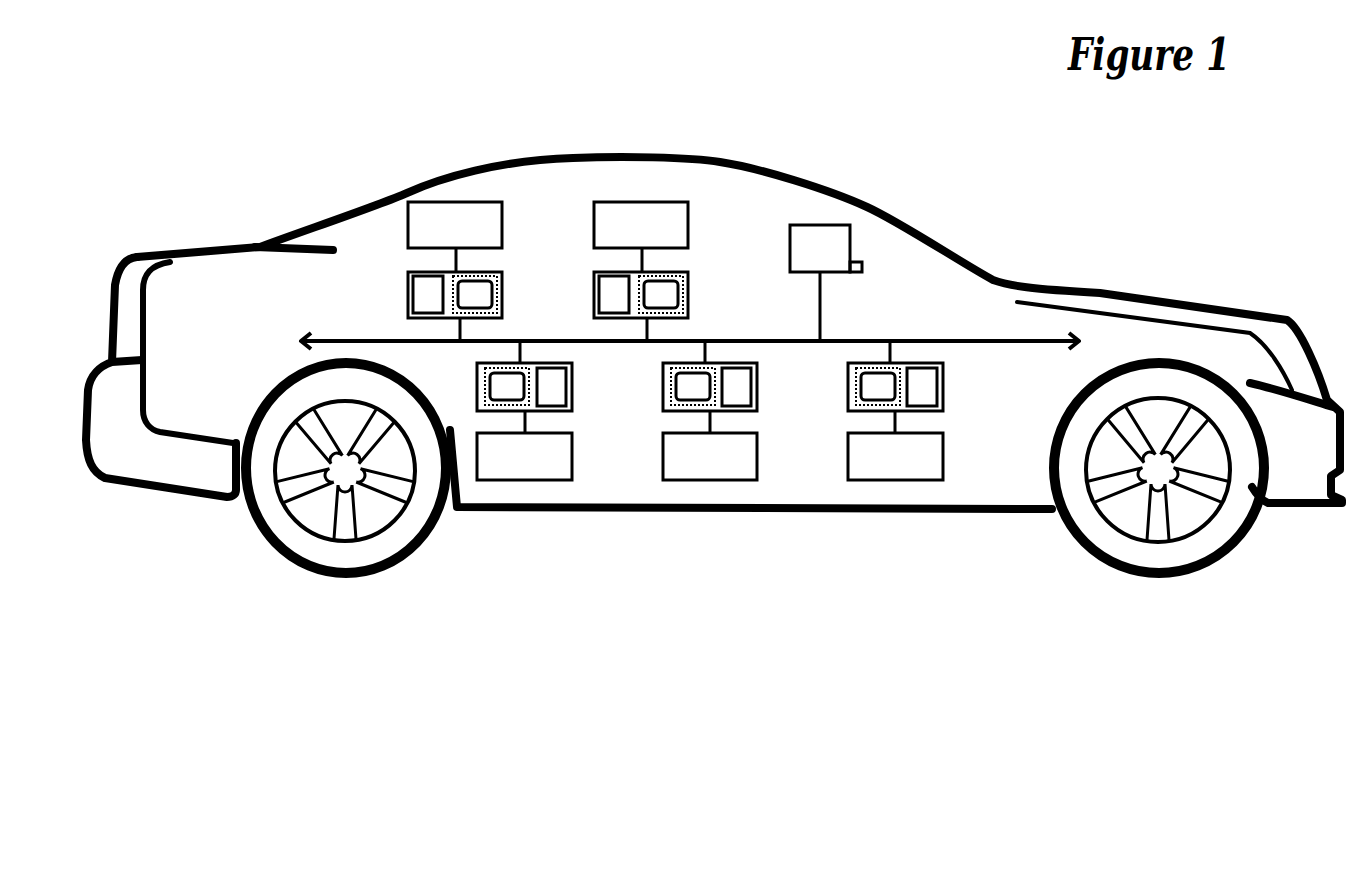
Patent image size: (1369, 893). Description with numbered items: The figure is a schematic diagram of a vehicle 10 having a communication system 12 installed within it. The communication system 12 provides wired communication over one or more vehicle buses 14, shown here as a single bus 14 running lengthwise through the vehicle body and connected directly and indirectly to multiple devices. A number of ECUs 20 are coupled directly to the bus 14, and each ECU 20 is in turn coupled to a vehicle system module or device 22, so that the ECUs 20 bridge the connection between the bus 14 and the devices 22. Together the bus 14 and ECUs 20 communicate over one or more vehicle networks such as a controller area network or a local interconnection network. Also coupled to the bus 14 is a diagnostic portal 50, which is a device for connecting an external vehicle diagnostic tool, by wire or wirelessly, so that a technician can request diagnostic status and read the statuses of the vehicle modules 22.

The vehicle 10 is at (1016, 199).
The communication system 12 is at (792, 468).
The vehicle bus 14 is at (908, 340).
The ECU 20 is at (503, 303).
The vehicle system module 22 is at (503, 233).
The diagnostic portal 50 is at (852, 252).